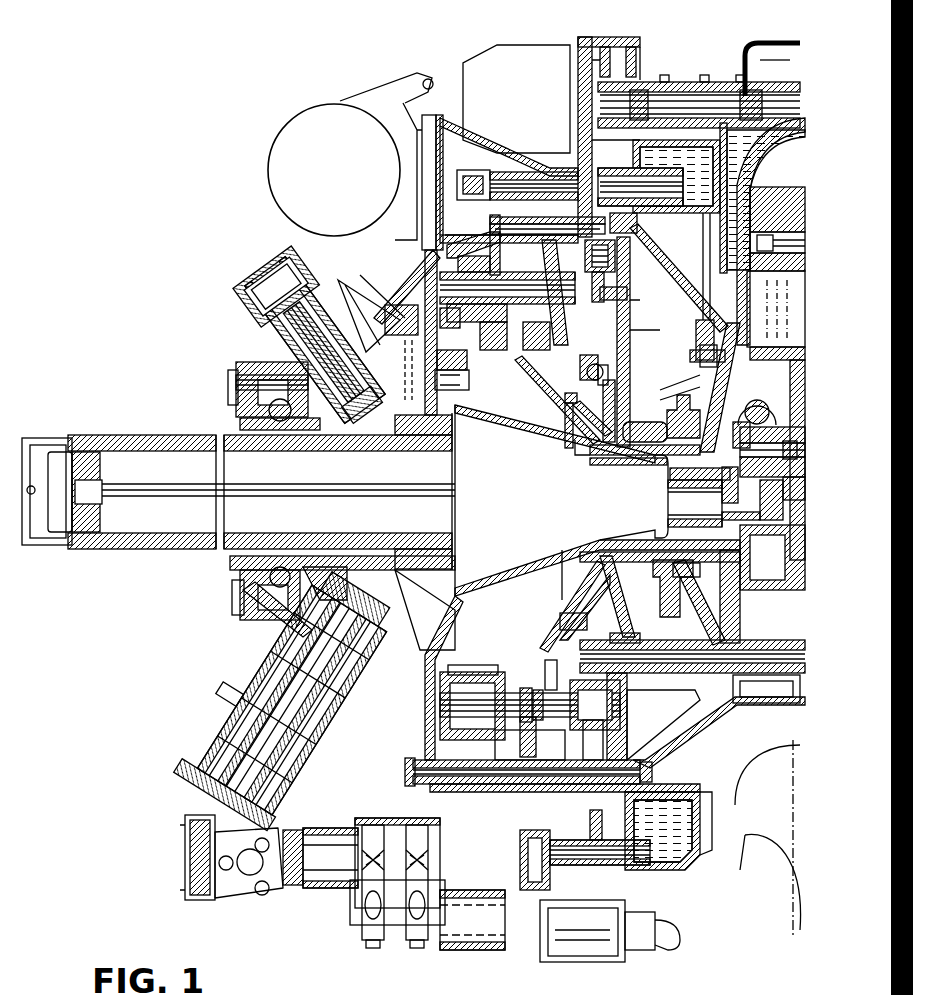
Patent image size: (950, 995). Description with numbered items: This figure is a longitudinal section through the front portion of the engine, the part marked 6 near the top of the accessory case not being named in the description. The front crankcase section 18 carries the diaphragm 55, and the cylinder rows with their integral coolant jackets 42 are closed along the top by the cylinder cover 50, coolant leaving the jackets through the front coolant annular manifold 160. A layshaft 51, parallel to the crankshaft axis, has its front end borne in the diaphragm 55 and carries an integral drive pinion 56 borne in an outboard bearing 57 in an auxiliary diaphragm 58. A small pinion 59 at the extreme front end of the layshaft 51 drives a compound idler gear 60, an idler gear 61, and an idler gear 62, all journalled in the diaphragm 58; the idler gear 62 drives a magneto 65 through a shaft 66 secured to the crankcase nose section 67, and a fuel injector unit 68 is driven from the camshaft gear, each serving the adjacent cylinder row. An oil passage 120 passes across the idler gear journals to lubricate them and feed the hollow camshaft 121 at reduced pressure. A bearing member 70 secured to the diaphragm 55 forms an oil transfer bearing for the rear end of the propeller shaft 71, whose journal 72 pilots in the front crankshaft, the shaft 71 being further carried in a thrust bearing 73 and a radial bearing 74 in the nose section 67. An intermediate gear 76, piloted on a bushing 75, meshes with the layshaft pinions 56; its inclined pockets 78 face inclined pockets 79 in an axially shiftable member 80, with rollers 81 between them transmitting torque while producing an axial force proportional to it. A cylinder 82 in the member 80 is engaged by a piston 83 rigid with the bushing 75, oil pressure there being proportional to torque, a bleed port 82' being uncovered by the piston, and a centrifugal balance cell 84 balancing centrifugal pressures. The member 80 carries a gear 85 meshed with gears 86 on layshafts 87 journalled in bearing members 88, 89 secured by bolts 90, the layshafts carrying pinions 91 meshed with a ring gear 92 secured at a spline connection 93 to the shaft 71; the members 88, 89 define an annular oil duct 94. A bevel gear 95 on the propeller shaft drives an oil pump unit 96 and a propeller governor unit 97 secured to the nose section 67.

The accessory drive housing 6 is at (612, 72).
The front crankcase section 18 is at (744, 702).
The coolant jacket 42 is at (737, 254).
The cylinder cover 50 is at (746, 52).
The layshaft 51 is at (750, 672).
The diaphragm 55 is at (742, 408).
The drive pinion 56 is at (660, 684).
The outboard bearing 57 is at (638, 698).
The auxiliary diaphragm 58 is at (630, 332).
The small pinion 59 is at (578, 632).
The compound idler gear 60 is at (587, 735).
The idler gear 61 is at (594, 302).
The idler gear 62 is at (582, 208).
The magneto 65 is at (376, 237).
The shaft 66 is at (468, 204).
The crankcase nose section 67 is at (397, 276).
The fuel injector unit 68 is at (512, 50).
The bearing member 70 is at (696, 372).
The propeller shaft 71 is at (484, 422).
The journal 72 is at (710, 524).
The thrust bearing 73 is at (275, 442).
The radial bearing 74 is at (308, 442).
The bushing 75 is at (604, 462).
The intermediate gear 76 is at (660, 388).
The inclined pockets 78 is at (598, 362).
The inclined pockets 79 is at (586, 361).
The axially shiftable member 80 is at (575, 376).
The rollers 81 is at (610, 382).
The cylinder 82 is at (554, 425).
The bleed port 82' is at (556, 398).
The piston 83 is at (592, 428).
The centrifugal balance cell 84 is at (612, 427).
The gear 85 is at (535, 656).
The gears 86 is at (560, 666).
The layshafts 87 is at (540, 725).
The bearing member 88 is at (487, 793).
The bearing member 89 is at (532, 792).
The bolts 90 is at (414, 784).
The pinions 91 is at (460, 678).
The ring gear 92 is at (455, 264).
The spline connection 93 is at (455, 365).
The annular oil duct 94 is at (515, 820).
The bevel gear 95 is at (350, 556).
The oil pump unit 96 is at (330, 725).
The propeller governor unit 97 is at (352, 382).
The oil passage 120 is at (632, 263).
The camshaft 121 is at (758, 100).
The front coolant annular manifold 160 is at (670, 226).